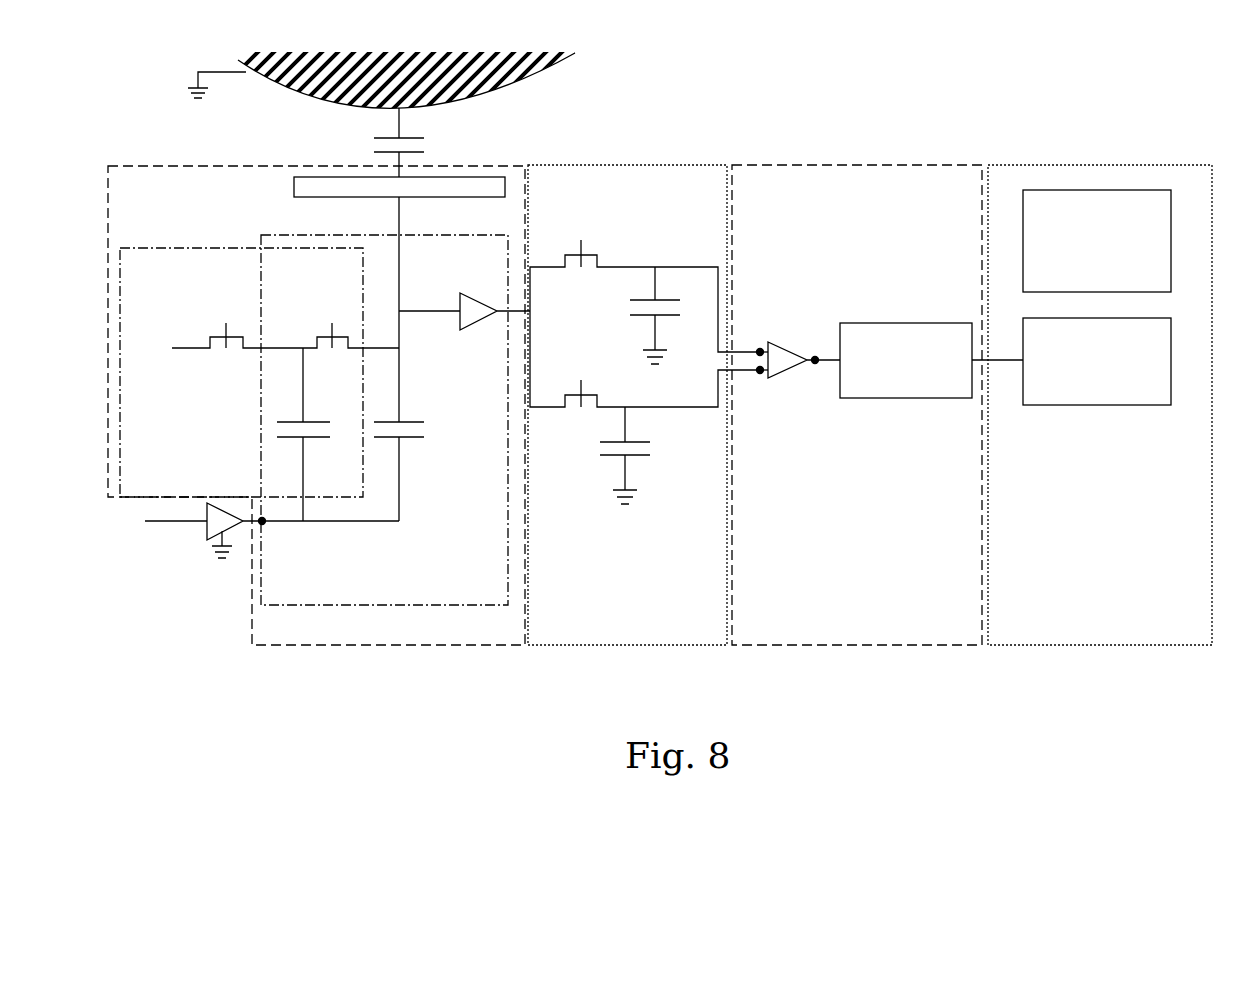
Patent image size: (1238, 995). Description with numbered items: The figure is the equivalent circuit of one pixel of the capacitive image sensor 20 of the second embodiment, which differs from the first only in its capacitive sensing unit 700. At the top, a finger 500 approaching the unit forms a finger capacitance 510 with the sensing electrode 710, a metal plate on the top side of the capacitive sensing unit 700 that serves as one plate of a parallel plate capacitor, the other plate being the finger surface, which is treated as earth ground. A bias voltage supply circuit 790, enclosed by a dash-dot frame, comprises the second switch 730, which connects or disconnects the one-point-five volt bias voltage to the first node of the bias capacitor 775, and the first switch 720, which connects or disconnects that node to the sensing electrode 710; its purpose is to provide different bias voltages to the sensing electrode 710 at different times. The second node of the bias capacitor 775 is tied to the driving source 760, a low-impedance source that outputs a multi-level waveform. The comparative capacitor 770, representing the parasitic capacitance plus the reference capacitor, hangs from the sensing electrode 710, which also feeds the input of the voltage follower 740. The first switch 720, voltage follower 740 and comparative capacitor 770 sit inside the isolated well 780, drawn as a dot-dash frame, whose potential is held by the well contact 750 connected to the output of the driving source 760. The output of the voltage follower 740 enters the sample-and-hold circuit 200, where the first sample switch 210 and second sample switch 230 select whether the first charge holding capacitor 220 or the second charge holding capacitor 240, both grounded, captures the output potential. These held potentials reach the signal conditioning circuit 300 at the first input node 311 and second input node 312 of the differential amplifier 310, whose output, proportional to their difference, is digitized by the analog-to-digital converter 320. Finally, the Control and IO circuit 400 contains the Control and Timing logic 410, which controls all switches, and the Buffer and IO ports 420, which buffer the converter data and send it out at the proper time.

The capacitive image sensor 20 is at (1173, 68).
The finger 500 is at (305, 108).
The finger capacitance 510 is at (410, 138).
The sensing electrode 710 is at (294, 193).
The bias voltage supply circuit 790 is at (143, 248).
The second switch 730 is at (222, 325).
The first switch 720 is at (330, 325).
The bias capacitor 775 is at (318, 420).
The voltage follower 740 is at (482, 330).
The comparative capacitor 770 is at (415, 490).
The driving source 760 is at (205, 535).
The well contact 750 is at (265, 526).
The capacitive sensing unit 700 is at (340, 647).
The isolated well 780 is at (498, 608).
The first sample switch 210 is at (590, 252).
The first charge holding capacitor 220 is at (645, 320).
The second sample switch 230 is at (596, 395).
The second charge holding capacitor 240 is at (625, 455).
The sample-and-hold circuit 200 is at (610, 647).
The first input node 311 is at (765, 344).
The second input node 312 is at (758, 376).
The differential amplifier 310 is at (782, 378).
The analog-to-digital converter 320 is at (905, 400).
The signal conditioning circuit 300 is at (843, 647).
The Control and Timing logic 410 is at (1097, 241).
The Buffer and IO ports 420 is at (1097, 361).
The Control and IO circuit 400 is at (1082, 647).